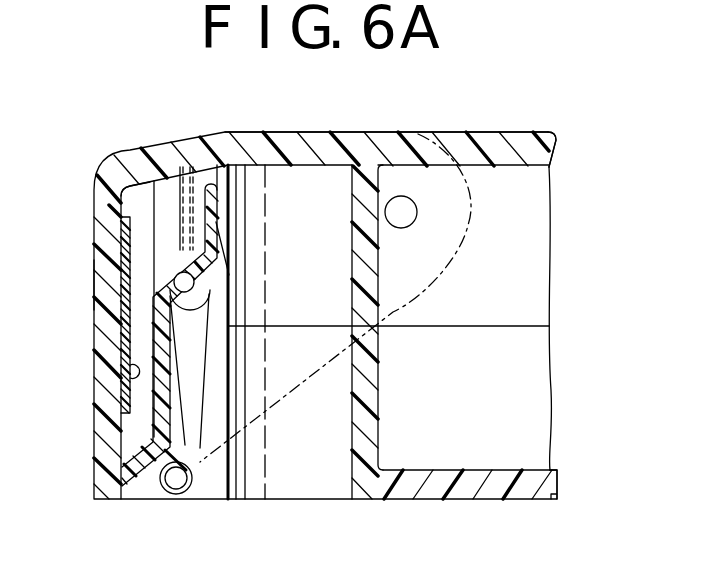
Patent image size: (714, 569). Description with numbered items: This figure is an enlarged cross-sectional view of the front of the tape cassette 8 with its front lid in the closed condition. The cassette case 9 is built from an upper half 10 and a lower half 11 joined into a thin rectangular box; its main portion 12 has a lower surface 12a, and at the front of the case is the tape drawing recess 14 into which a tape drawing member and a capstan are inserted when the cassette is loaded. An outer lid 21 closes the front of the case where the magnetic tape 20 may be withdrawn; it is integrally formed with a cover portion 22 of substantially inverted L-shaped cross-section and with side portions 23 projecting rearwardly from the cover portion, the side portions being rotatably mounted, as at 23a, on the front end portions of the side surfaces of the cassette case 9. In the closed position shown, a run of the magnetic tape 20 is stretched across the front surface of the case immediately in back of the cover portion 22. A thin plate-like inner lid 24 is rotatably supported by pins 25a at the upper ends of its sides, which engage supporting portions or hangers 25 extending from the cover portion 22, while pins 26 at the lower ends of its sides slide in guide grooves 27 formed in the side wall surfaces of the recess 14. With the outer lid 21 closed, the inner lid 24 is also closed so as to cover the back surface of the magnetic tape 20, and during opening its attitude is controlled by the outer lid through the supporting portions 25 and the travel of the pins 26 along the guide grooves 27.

The tape cassette 8 is at (100, 130).
The cassette case 9 is at (525, 135).
The upper half 10 is at (472, 135).
The lower half 11 is at (425, 500).
The main portion 12 is at (557, 153).
The lower surface of the main portion 12a is at (520, 503).
The tape drawing recess 14 is at (350, 457).
The magnetic tape 20 is at (127, 378).
The outer lid 21 is at (94, 222).
The cover portion 22 is at (93, 282).
The side portions 23 is at (133, 190).
The pivot mounting 23a is at (410, 214).
The inner lid 24 is at (170, 368).
The supporting portions 25 is at (157, 192).
The pins 25a is at (194, 290).
The pins 26 is at (200, 462).
The guide grooves 27 is at (203, 462).